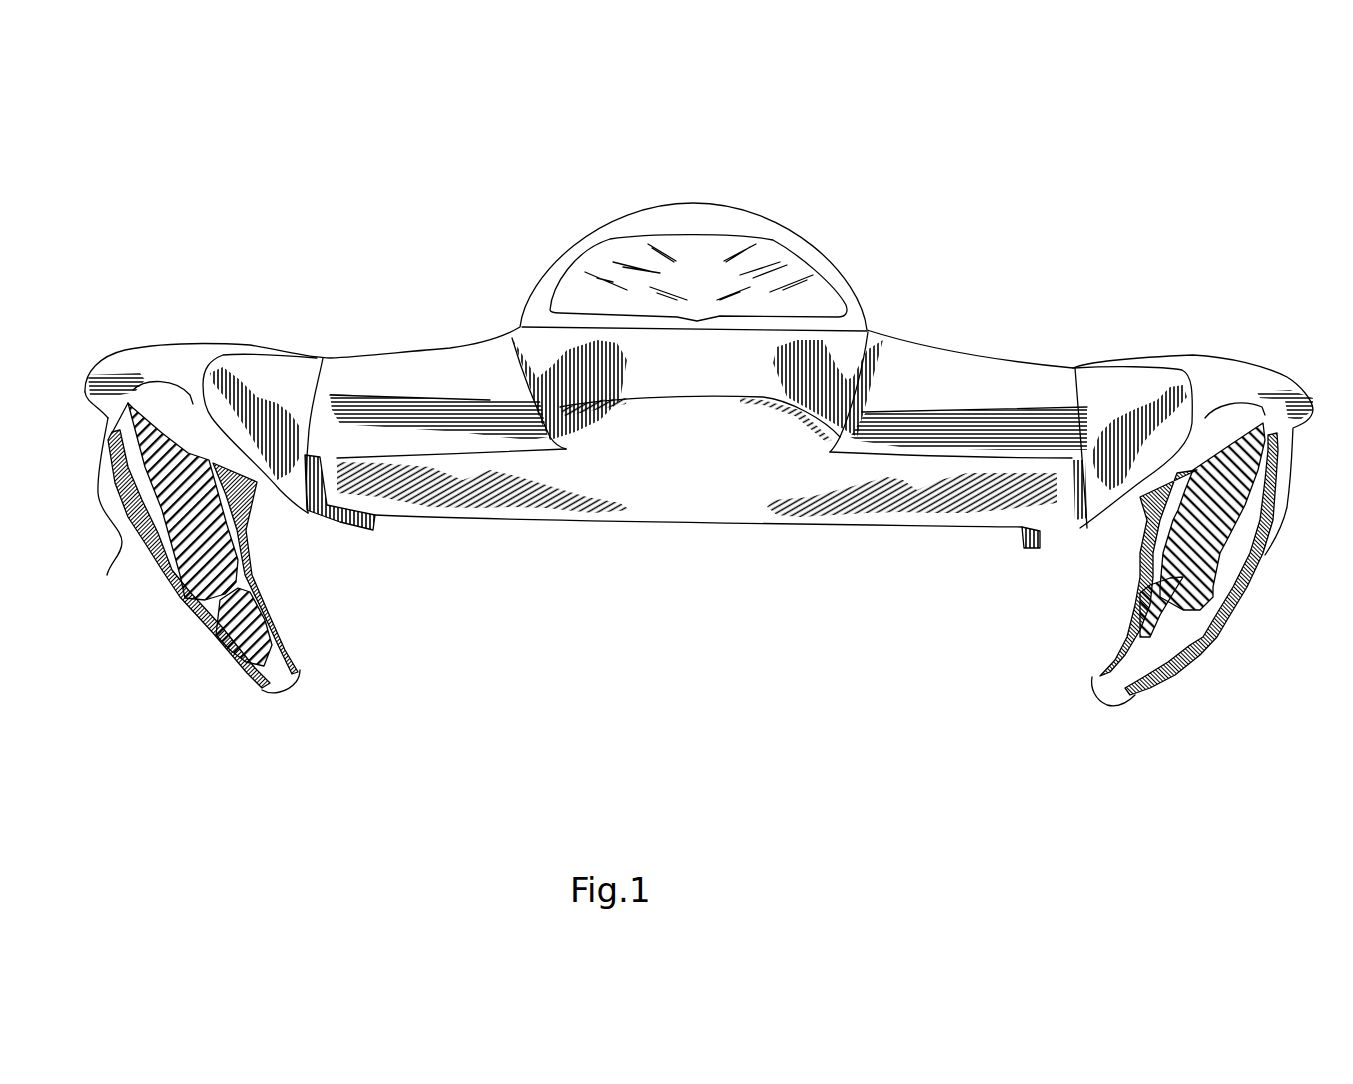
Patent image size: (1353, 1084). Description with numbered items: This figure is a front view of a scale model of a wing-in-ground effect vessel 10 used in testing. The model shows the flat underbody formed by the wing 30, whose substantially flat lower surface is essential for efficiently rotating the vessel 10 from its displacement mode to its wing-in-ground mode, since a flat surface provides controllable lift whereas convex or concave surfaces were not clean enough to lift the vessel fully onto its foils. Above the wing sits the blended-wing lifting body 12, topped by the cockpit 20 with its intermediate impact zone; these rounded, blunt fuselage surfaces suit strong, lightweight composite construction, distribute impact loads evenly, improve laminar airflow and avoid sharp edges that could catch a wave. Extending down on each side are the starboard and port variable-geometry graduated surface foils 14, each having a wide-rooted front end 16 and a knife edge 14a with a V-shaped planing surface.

The WIG effect vessel 10 is at (903, 190).
The blended-wing lifting body 12 is at (263, 322).
The variable-geometry graduated surface foil 14 is at (170, 631).
The knife edge of the surface foil 14a is at (283, 692).
The front end of the surface foil 16 is at (107, 575).
The cockpit with intermediate impact zone 20 is at (693, 214).
The wing having flat underside 30 is at (692, 545).